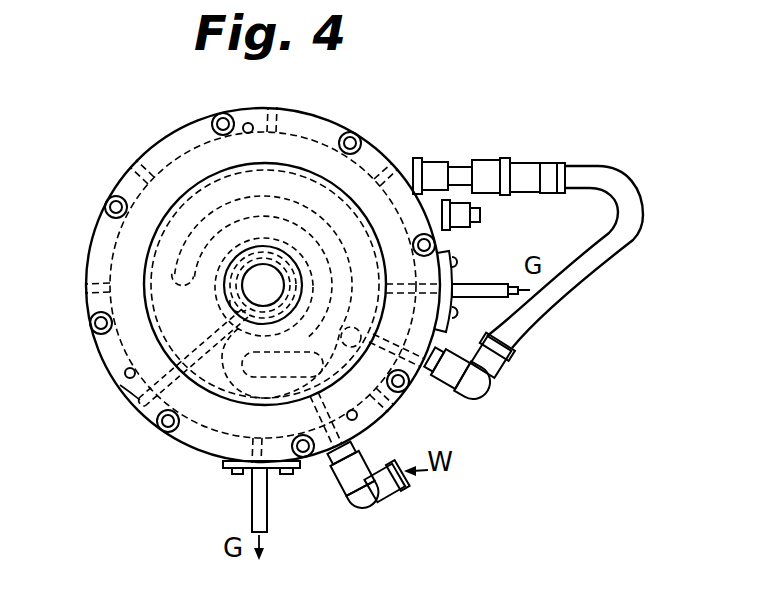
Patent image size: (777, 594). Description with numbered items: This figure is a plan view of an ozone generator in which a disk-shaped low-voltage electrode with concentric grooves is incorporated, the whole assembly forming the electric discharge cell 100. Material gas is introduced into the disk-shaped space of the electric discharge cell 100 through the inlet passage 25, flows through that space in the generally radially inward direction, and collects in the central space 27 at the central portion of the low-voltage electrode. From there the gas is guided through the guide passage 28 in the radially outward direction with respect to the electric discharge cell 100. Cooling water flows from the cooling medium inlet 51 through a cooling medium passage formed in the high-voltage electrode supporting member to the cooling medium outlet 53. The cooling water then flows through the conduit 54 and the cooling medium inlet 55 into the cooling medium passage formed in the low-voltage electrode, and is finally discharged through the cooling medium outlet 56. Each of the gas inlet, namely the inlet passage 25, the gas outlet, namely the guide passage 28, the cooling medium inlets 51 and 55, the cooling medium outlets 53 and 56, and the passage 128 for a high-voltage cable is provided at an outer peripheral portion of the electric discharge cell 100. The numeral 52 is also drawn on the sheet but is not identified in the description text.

The electric discharge cell 100 is at (150, 142).
The central space 27 is at (275, 278).
The cooling medium inlet 55 is at (428, 174).
The cooling medium outlet 56 is at (483, 214).
The inlet passage 25 is at (474, 284).
The conduit 54 is at (617, 247).
The cooling medium outlet 53 is at (477, 394).
The cooling medium inlet 51 is at (358, 497).
The guide passage 28 is at (265, 499).
The gas passage 52 is at (228, 387).
The passage for a high-voltage cable 128 is at (123, 393).